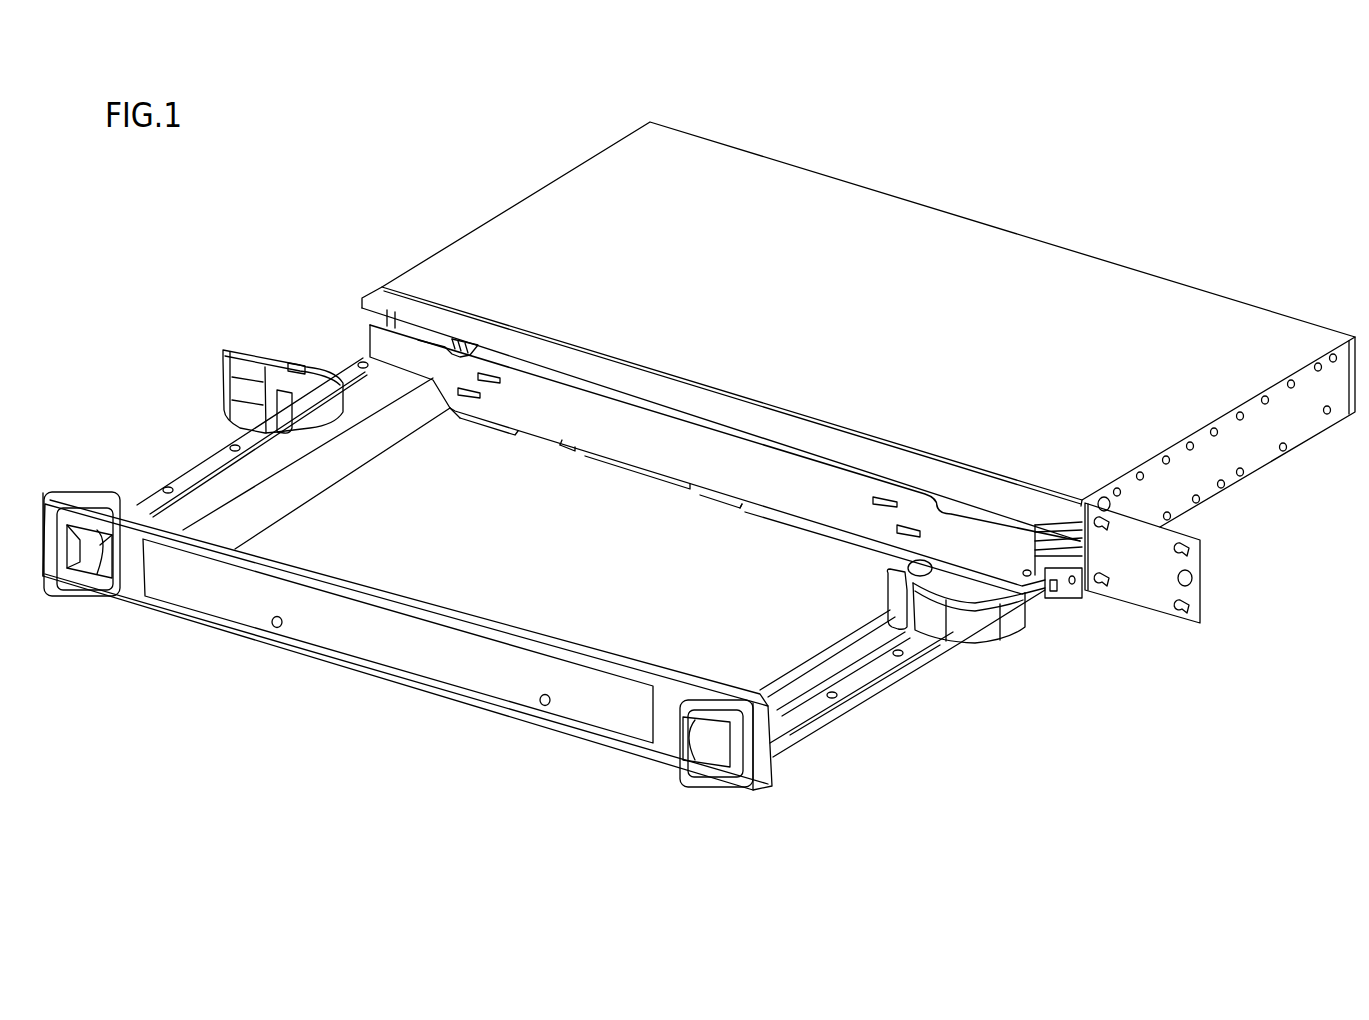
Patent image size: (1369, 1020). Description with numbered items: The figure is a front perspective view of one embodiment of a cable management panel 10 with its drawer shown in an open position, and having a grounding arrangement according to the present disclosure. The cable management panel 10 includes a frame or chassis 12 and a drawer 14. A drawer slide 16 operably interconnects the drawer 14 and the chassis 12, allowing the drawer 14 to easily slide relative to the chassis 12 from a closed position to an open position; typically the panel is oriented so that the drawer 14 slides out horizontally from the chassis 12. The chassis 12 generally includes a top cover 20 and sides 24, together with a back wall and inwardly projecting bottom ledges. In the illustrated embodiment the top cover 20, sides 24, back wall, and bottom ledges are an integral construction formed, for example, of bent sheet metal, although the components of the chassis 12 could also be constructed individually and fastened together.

The cable management panel 10 is at (308, 260).
The chassis 12 is at (491, 196).
The drawer 14 is at (175, 458).
The drawer slide 16 is at (1062, 543).
The top cover 20 is at (880, 235).
The sides 24 is at (1250, 448).